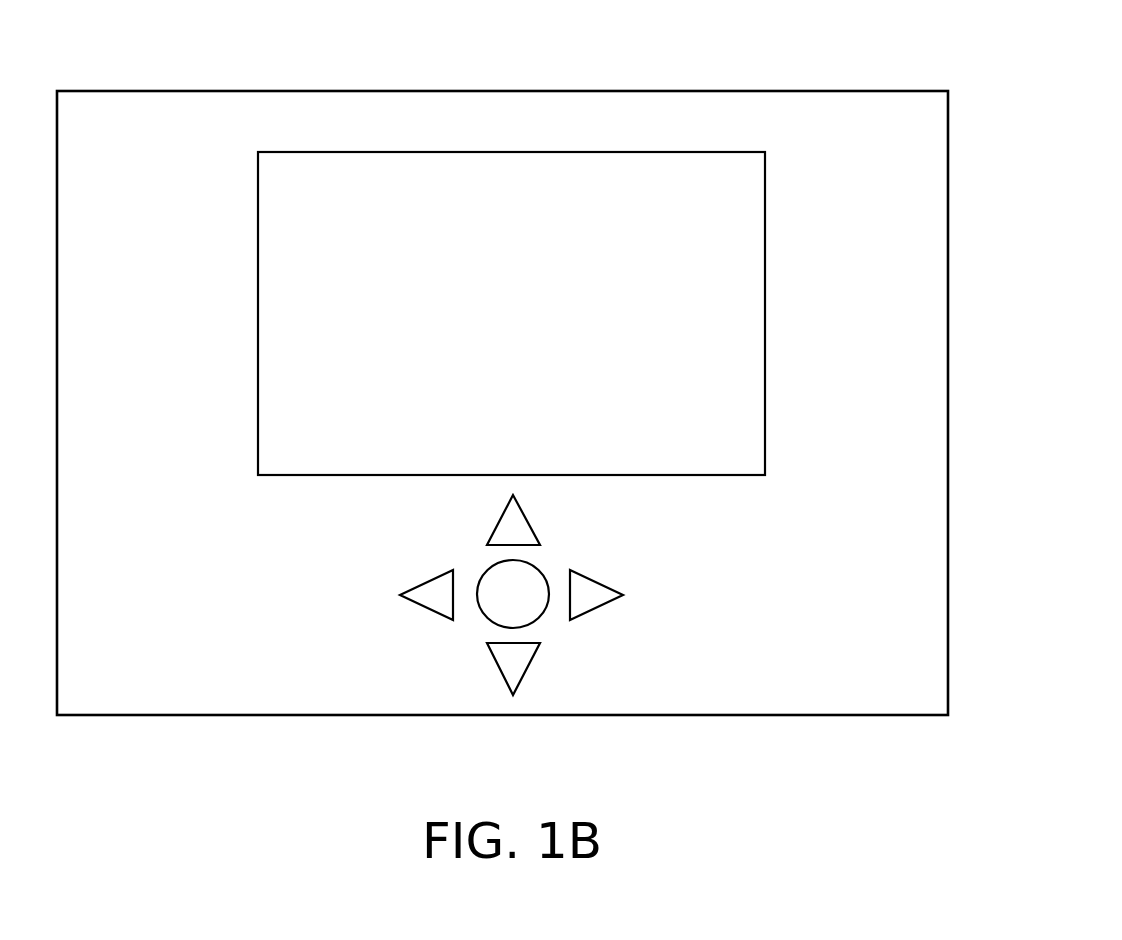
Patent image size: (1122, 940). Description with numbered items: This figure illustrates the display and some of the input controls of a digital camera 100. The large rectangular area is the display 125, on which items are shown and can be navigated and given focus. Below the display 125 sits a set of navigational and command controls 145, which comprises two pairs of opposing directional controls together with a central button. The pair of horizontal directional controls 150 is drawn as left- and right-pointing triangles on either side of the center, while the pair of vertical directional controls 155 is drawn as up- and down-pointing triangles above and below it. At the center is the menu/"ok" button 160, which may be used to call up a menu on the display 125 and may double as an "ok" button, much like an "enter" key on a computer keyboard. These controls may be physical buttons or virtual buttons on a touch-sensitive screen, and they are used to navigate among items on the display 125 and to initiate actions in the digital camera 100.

The digital camera 100 is at (666, 70).
The display 125 is at (767, 374).
The navigational and command controls 145 is at (347, 596).
The horizontal directional controls 150 is at (422, 584).
The vertical directional controls 155 is at (530, 513).
The menu/"ok" button 160 is at (480, 577).